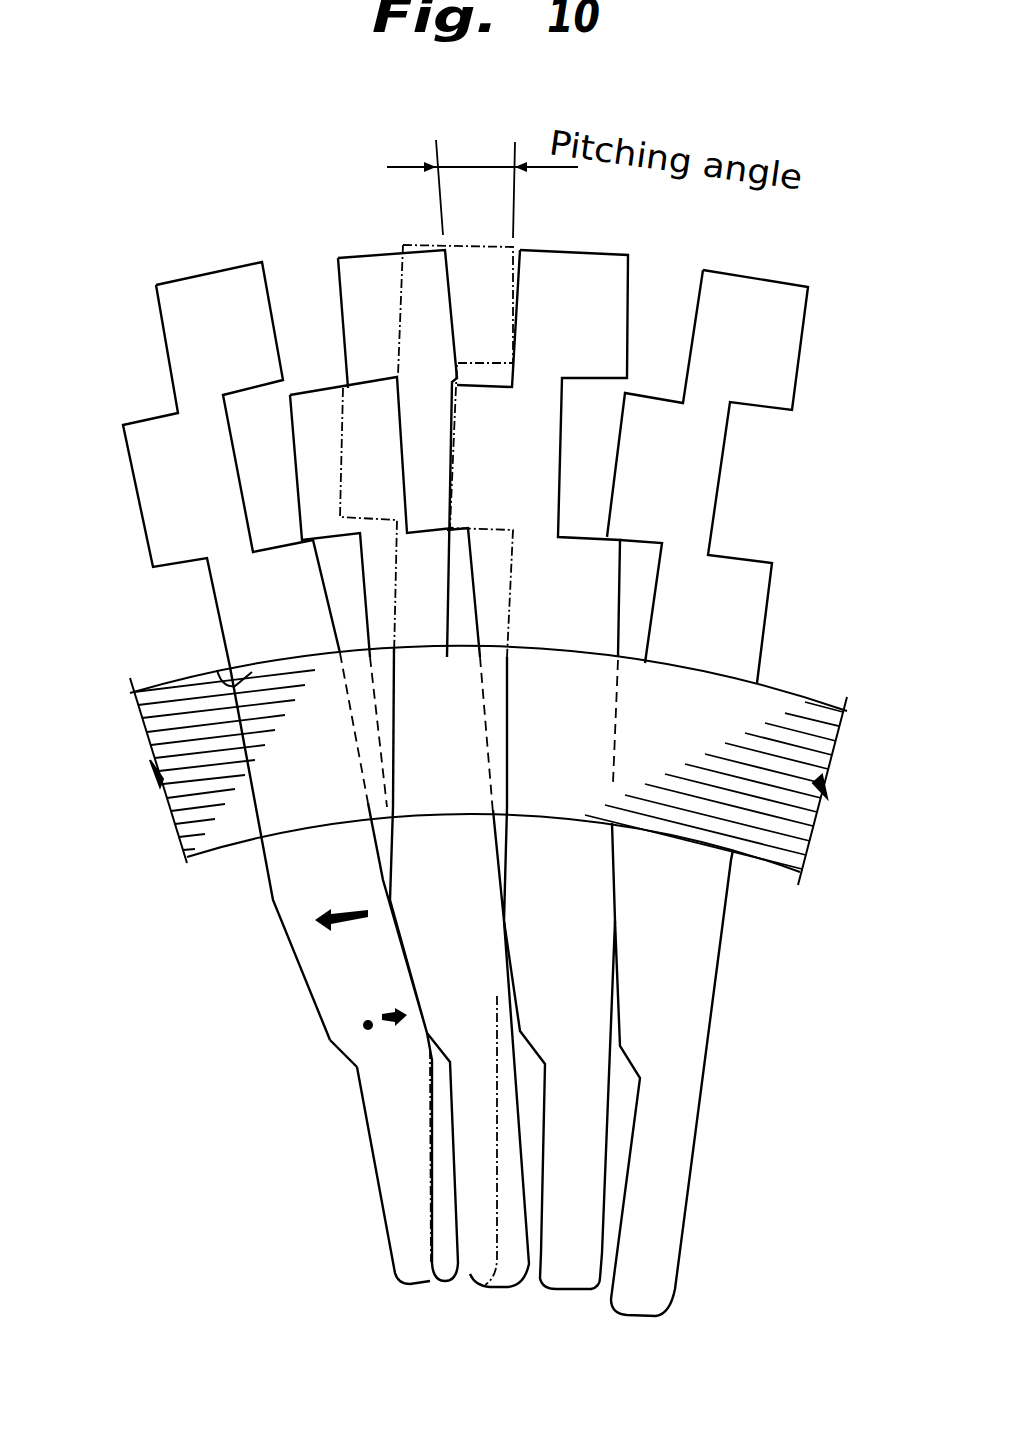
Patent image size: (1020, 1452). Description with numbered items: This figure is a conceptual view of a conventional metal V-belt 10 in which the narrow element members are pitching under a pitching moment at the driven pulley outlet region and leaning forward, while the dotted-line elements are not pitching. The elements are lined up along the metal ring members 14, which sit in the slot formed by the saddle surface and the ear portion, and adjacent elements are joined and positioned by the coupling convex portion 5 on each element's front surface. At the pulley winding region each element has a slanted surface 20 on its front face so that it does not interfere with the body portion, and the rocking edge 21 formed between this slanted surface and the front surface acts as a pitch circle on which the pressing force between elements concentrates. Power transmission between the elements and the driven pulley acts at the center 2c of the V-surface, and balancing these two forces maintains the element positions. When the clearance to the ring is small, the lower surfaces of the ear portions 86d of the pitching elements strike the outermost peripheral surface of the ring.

The stator core 10 is at (175, 245).
The convex portion 5 is at (158, 430).
The metal ring members 14 is at (167, 683).
The ear portions 86d is at (225, 685).
The rocking edge 21 is at (274, 918).
The slanted surface 20 is at (297, 977).
The center of the V-surface 2c is at (365, 1027).